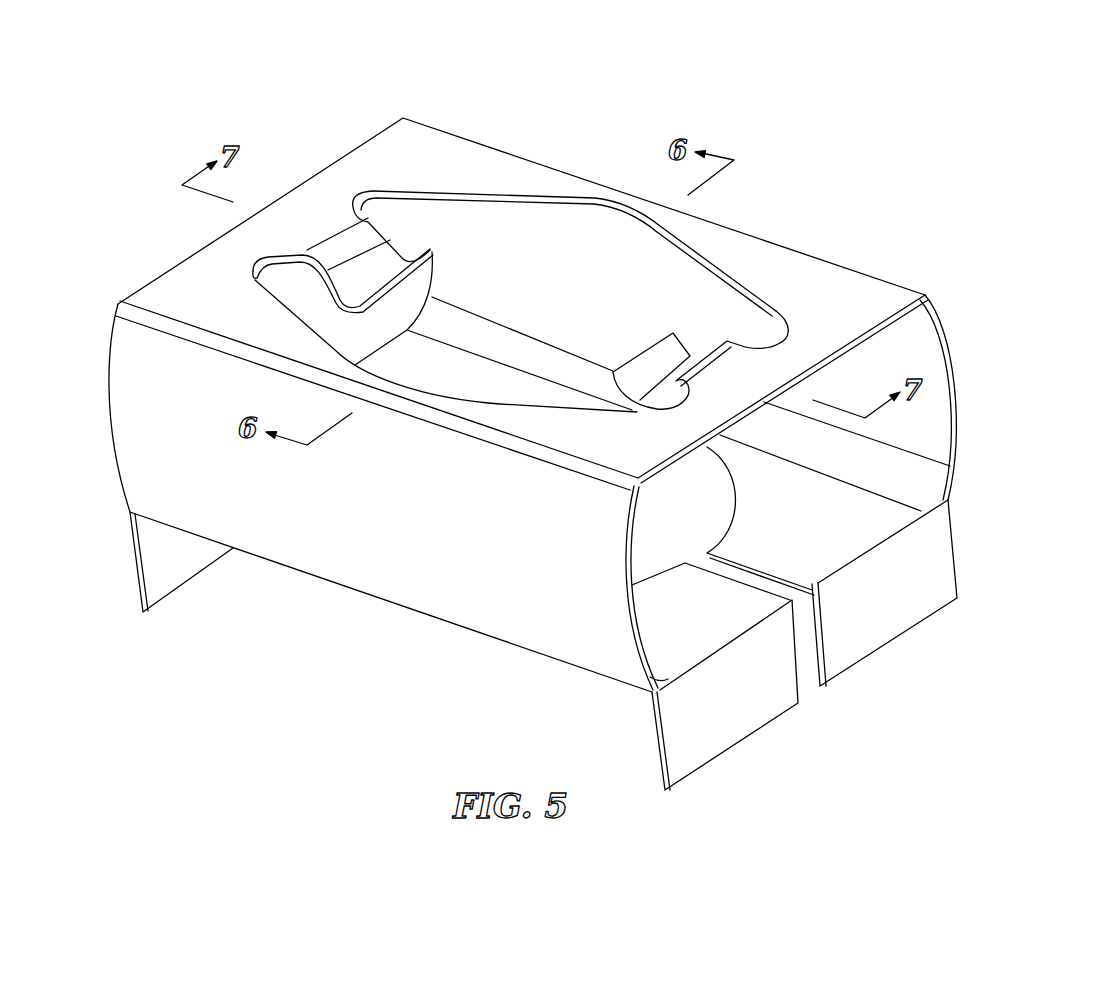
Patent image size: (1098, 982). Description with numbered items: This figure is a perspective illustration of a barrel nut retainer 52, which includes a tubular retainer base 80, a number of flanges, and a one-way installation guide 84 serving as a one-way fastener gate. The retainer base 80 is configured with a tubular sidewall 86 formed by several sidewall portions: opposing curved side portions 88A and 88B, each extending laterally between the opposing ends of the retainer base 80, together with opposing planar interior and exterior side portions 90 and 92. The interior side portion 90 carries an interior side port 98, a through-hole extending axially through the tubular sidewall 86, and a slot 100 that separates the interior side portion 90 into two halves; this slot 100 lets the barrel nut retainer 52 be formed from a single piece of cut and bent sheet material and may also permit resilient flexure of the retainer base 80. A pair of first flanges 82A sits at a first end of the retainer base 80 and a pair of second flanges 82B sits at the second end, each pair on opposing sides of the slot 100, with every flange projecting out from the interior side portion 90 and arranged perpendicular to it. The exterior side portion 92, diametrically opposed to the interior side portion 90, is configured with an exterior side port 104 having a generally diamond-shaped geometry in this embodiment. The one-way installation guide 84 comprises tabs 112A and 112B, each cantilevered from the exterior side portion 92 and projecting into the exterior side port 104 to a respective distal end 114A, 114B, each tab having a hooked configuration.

The barrel nut retainer 52 is at (591, 449).
The retainer base 80 is at (963, 348).
The tubular sidewall 86 is at (927, 283).
The exterior side portion 92 is at (857, 284).
The curved side portion 88A is at (578, 642).
The curved side portion 88B is at (896, 485).
The first flanges 82A is at (190, 590).
The second flanges 82B is at (903, 642).
The interior side portion 90 is at (870, 522).
The interior side port 98 is at (654, 548).
The slot 100 is at (712, 568).
The one-way installation guide 84 is at (545, 240).
The exterior side port 104 is at (563, 225).
The tab 112A is at (388, 235).
The tab 112B is at (690, 342).
The distal end 114A is at (432, 253).
The distal end 114B is at (647, 357).